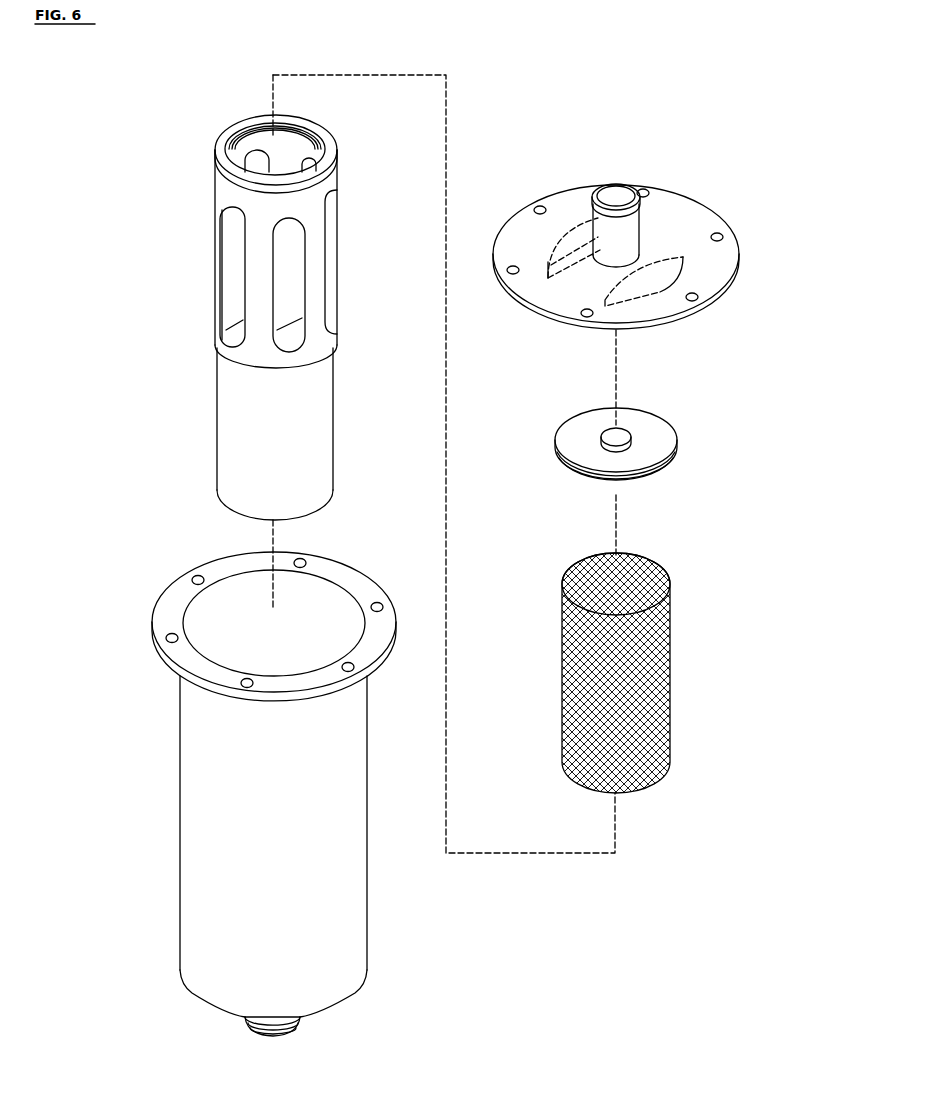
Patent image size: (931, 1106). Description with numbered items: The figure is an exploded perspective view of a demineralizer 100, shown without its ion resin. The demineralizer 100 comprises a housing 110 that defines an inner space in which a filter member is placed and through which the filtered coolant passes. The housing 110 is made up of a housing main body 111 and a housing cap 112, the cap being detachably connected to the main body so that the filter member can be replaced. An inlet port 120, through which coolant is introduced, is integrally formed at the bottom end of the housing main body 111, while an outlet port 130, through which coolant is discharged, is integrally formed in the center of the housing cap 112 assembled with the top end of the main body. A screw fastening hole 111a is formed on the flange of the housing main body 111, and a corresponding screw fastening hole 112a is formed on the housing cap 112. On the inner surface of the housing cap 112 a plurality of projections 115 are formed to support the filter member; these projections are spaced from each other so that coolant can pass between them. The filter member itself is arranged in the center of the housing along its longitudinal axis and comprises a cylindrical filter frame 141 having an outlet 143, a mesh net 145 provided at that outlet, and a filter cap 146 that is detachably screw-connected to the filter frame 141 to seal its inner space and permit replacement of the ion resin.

The demineralizer 100 is at (167, 80).
The housing 110 is at (435, 592).
The housing main body 111 is at (226, 784).
The screw fastening hole 111a is at (377, 600).
The housing cap 112 is at (659, 248).
The screw fastening hole 112a is at (722, 236).
The projections 115 is at (662, 300).
The inlet port 120 is at (300, 1022).
The outlet port 130 is at (597, 215).
The filter frame 141 is at (217, 405).
The outlet 143 is at (220, 258).
The mesh net 145 is at (672, 660).
The filter cap 146 is at (677, 440).